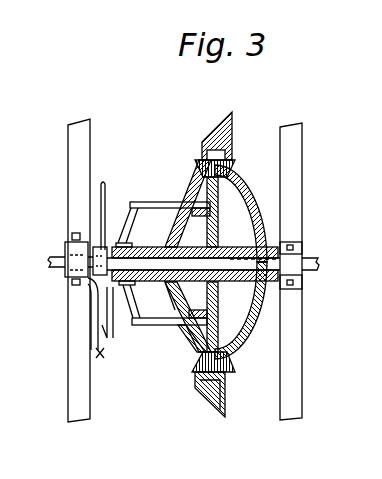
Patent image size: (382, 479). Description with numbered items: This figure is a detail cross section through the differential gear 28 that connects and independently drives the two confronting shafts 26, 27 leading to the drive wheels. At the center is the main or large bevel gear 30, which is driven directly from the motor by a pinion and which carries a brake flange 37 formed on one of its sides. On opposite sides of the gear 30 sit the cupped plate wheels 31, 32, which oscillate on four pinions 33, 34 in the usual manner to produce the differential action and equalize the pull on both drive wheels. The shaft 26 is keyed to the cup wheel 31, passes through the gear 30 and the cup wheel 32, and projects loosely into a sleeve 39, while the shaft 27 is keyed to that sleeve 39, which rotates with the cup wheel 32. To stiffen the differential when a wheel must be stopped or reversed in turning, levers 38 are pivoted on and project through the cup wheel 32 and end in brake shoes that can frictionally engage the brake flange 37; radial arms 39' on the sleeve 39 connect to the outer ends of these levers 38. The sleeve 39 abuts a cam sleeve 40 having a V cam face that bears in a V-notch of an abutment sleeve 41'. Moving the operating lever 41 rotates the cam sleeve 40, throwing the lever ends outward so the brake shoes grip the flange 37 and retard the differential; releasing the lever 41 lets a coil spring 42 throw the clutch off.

The shaft 26 is at (318, 262).
The shaft 27 is at (58, 258).
The differential gear 28 is at (188, 291).
The main bevel gear 30 is at (225, 408).
The cupped plate wheel 31 is at (243, 338).
The cupped plate wheel 32 is at (190, 348).
The pinion 33 is at (232, 152).
The pinion 34 is at (225, 372).
The brake flange 37 is at (218, 218).
The lever 38 is at (145, 202).
The sleeve 39 is at (131, 210).
The radial arm 39' is at (119, 319).
The cam sleeve 40 is at (98, 300).
The operating lever 41 is at (66, 215).
The abutment sleeve 41' is at (54, 263).
The coil spring 42 is at (157, 297).